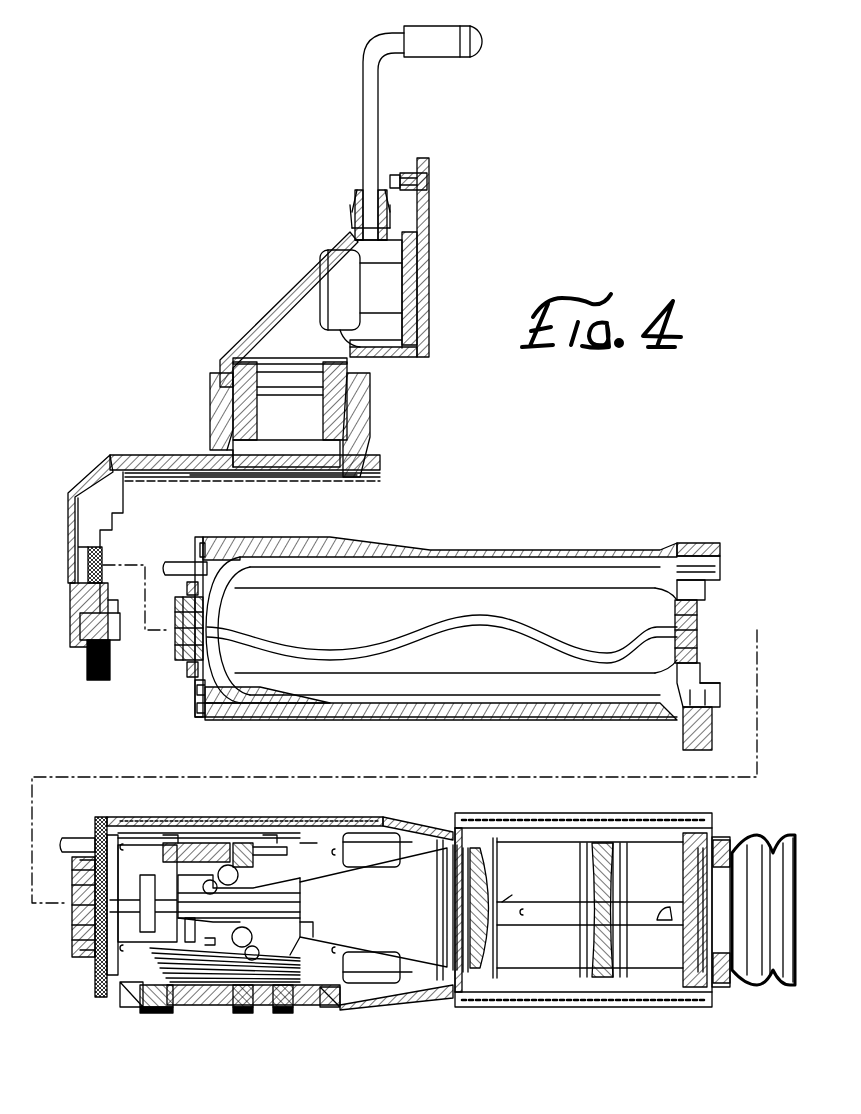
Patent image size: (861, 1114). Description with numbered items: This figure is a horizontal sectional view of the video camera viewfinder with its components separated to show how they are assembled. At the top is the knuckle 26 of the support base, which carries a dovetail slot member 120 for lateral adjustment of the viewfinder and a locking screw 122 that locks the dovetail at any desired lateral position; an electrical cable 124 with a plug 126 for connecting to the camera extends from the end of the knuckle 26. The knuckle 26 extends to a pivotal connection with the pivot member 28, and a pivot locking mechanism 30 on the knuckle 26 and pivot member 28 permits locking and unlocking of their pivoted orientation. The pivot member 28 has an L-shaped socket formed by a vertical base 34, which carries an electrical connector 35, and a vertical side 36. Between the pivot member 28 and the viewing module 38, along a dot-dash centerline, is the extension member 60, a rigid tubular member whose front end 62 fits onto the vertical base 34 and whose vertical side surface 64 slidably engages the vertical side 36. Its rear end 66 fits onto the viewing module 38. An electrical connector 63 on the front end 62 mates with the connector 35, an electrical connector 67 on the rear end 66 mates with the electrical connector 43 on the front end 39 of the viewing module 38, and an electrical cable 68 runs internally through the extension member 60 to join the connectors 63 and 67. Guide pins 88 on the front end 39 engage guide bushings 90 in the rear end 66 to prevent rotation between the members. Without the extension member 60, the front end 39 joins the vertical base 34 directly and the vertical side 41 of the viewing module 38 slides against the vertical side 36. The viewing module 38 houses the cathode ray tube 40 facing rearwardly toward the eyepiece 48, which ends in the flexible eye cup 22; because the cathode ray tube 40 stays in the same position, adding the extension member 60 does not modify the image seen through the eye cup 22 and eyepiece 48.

The eye cup 22 is at (763, 985).
The knuckle 26 is at (303, 273).
The pivot member 28 is at (147, 452).
The pivot locking mechanism 30 is at (380, 405).
The vertical base 34 is at (125, 502).
The electrical connector 35 is at (103, 555).
The vertical side 36 is at (203, 477).
The viewing module 38 is at (437, 1006).
The front end of the viewing module 39 is at (95, 982).
The cathode ray tube 40 is at (370, 970).
The vertical side of the viewing module 41 is at (230, 817).
The electrical connector 43 is at (73, 923).
The eyepiece 48 is at (613, 810).
The extension member 60 is at (483, 610).
The front end of the extension member 62 is at (193, 698).
The electrical connector 63 is at (172, 653).
The vertical side surface 64 is at (323, 540).
The rear end of the extension member 66 is at (713, 582).
The electrical connector 67 is at (700, 627).
The electrical cable 68 is at (300, 645).
The guide pins 88 is at (180, 562).
The guide bushings 90 is at (720, 570).
The dovetail slot member 120 is at (429, 247).
The locking screw 122 is at (395, 173).
The electrical cable 124 is at (362, 112).
The plug 126 is at (448, 47).